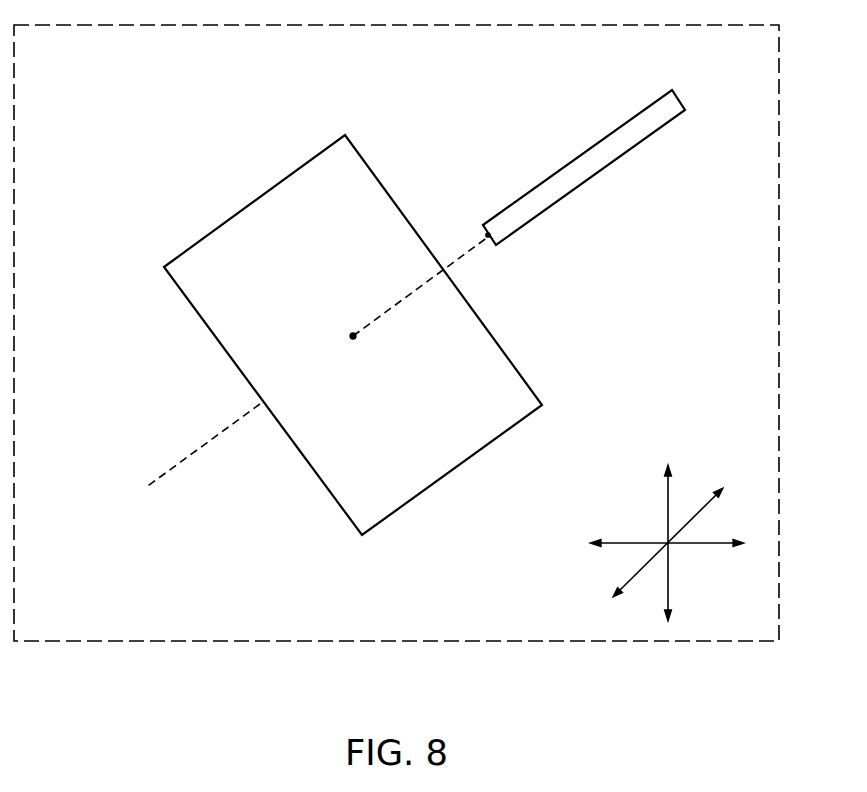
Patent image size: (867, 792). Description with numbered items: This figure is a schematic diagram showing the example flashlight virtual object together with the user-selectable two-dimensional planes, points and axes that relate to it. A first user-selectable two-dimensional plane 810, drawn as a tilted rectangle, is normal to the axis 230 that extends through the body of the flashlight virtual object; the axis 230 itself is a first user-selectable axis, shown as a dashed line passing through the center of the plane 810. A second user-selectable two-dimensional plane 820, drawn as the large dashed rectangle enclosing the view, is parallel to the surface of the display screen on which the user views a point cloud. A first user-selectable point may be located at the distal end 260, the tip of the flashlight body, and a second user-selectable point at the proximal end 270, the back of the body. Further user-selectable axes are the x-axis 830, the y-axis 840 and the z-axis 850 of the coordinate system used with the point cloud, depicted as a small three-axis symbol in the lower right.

The axis 230 is at (465, 254).
The distal end 260 is at (490, 249).
The proximal end 270 is at (689, 100).
The first user-selectable 2-D plane 810 is at (507, 351).
The second user-selectable 2-D plane 820 is at (780, 288).
The x-axis 830 is at (633, 581).
The y-axis 840 is at (624, 542).
The z-axis 850 is at (667, 492).